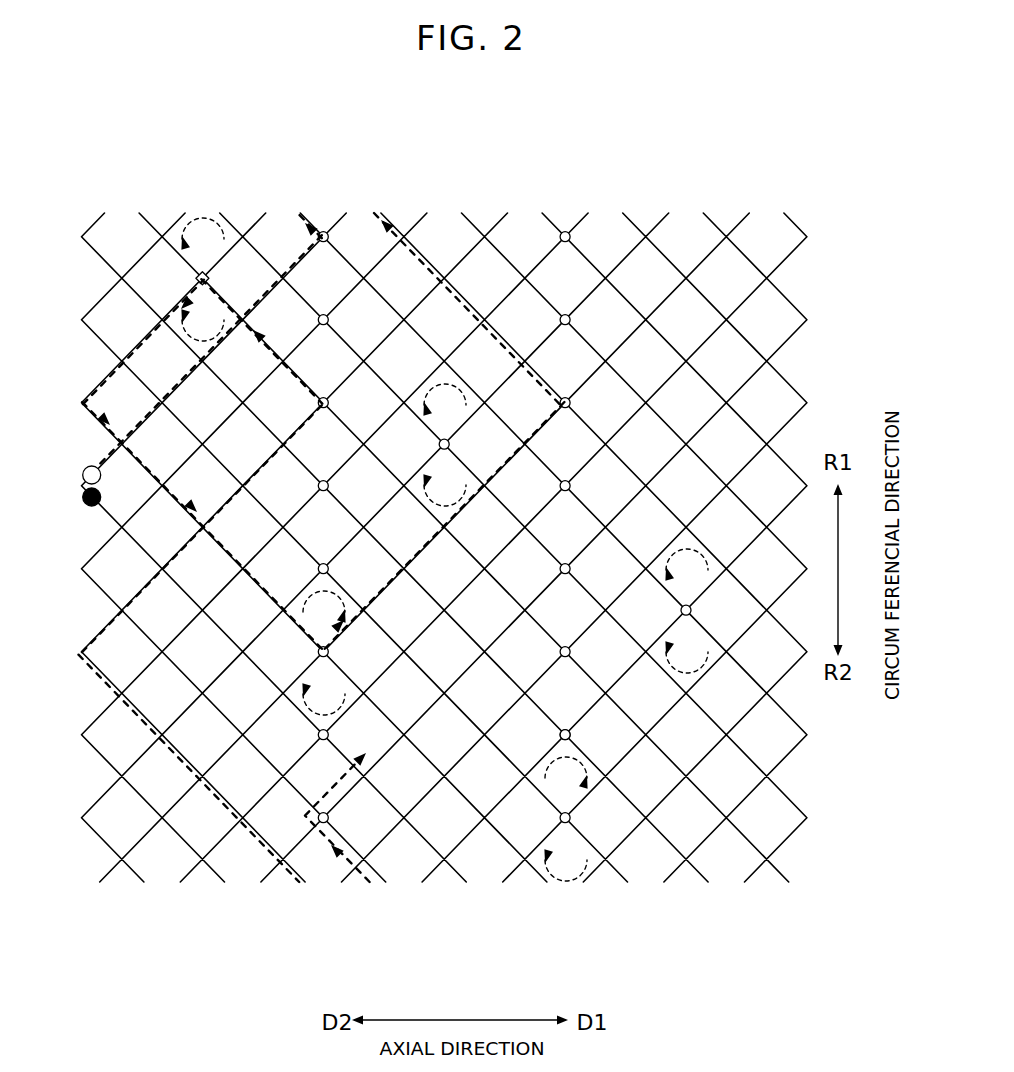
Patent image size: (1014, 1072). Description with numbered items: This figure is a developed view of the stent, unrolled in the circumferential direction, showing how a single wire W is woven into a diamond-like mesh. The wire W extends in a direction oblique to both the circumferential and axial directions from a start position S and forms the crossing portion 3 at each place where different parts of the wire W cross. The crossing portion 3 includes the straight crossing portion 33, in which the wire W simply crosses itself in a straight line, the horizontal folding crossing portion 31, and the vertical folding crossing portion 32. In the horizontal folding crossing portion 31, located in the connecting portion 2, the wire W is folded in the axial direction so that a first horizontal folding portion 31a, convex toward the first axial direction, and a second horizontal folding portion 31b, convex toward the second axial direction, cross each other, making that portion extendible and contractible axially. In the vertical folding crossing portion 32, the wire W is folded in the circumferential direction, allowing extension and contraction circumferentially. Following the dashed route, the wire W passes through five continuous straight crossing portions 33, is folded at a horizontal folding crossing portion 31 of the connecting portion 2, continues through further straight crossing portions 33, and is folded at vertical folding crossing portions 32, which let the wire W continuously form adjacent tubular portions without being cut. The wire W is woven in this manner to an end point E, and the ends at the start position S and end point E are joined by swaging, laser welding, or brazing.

The connecting portion 2 is at (797, 190).
The crossing portion 3 is at (568, 233).
The horizontal folding crossing portion 31 is at (845, 338).
The first horizontal folding portion 31a is at (570, 734).
The second horizontal folding portion 31b is at (562, 737).
The vertical folding crossing portion 32 is at (571, 818).
The straight crossing portion 33 is at (131, 442).
The wire W is at (803, 243).
The start position S is at (83, 473).
The end point E is at (84, 502).